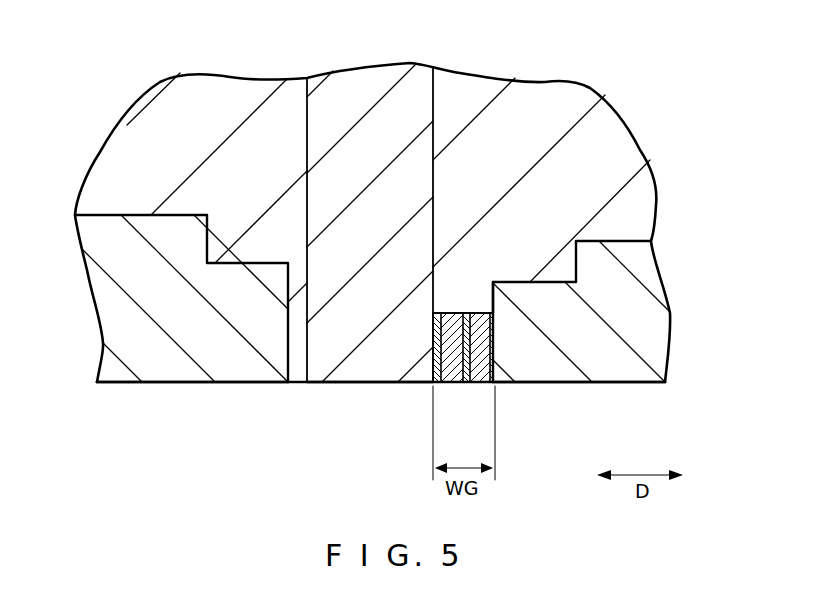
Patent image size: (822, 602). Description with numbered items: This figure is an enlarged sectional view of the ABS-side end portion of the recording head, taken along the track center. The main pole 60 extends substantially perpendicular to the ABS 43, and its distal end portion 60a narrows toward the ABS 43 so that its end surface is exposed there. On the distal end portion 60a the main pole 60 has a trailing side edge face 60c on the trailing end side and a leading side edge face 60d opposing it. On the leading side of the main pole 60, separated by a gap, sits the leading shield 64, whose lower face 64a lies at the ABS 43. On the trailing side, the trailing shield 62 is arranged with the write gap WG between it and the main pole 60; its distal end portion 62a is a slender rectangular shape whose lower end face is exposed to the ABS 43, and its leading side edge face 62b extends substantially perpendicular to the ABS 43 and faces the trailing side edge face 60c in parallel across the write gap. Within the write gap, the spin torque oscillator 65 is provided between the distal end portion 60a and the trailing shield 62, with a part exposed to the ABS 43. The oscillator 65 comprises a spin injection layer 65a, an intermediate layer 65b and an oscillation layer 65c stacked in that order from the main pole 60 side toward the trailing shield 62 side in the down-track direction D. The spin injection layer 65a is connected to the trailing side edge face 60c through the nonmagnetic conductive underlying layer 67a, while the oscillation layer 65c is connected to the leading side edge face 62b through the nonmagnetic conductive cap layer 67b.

The main pole 60 is at (370, 82).
The distal end portion of the main pole 60a is at (357, 362).
The trailing side edge face 60c is at (433, 185).
The leading side edge face 60d is at (307, 220).
The leading shield 64 is at (103, 292).
The bottom face of left insert block 64a is at (158, 367).
The ABS 43 is at (221, 382).
The trailing shield 62 is at (643, 260).
The distal end portion of the trailing shield 62a is at (622, 365).
The leading side edge face 62b is at (490, 297).
The spin torque oscillator 65 is at (460, 310).
The spin injection layer 65a is at (448, 367).
The intermediate layer 65b is at (456, 374).
The oscillation layer 65c is at (475, 368).
The nonmagnetic conductive layer (underlying layer) 67a is at (432, 363).
The nonmagnetic conductive layer (cap layer) 67b is at (496, 362).